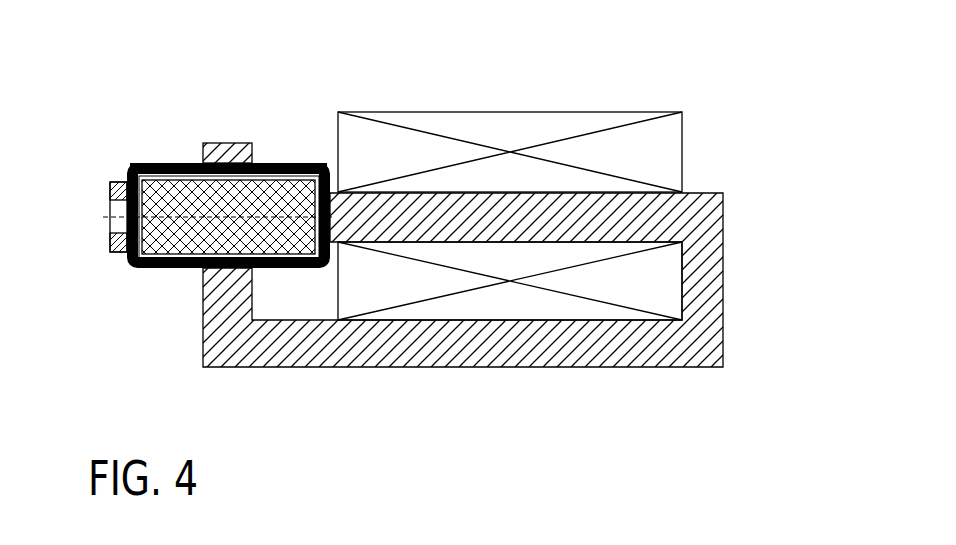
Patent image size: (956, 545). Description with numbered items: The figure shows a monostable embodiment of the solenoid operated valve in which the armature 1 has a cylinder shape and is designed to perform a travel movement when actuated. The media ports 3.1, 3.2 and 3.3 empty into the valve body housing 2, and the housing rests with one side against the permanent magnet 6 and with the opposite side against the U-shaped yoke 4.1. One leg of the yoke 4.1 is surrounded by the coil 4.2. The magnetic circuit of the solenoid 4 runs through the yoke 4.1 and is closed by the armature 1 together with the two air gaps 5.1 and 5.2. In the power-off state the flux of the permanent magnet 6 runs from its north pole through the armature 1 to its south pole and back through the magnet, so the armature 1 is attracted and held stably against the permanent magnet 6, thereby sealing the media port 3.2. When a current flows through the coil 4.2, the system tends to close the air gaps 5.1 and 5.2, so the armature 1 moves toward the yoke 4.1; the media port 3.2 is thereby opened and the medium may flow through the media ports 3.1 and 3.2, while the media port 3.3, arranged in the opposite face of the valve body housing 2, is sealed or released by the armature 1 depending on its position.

The armature 1 is at (163, 240).
The valve body housing 2 is at (130, 165).
The media port 3.1 is at (218, 152).
The media port 3.2 is at (128, 215).
The media port 3.3 is at (298, 170).
The solenoid 4 is at (512, 207).
The U-shaped yoke 4.1 is at (700, 245).
The coil 4.2 is at (668, 148).
The air gap 5.1 is at (138, 163).
The air gap 5.2 is at (317, 163).
The permanent magnet 6 is at (110, 190).